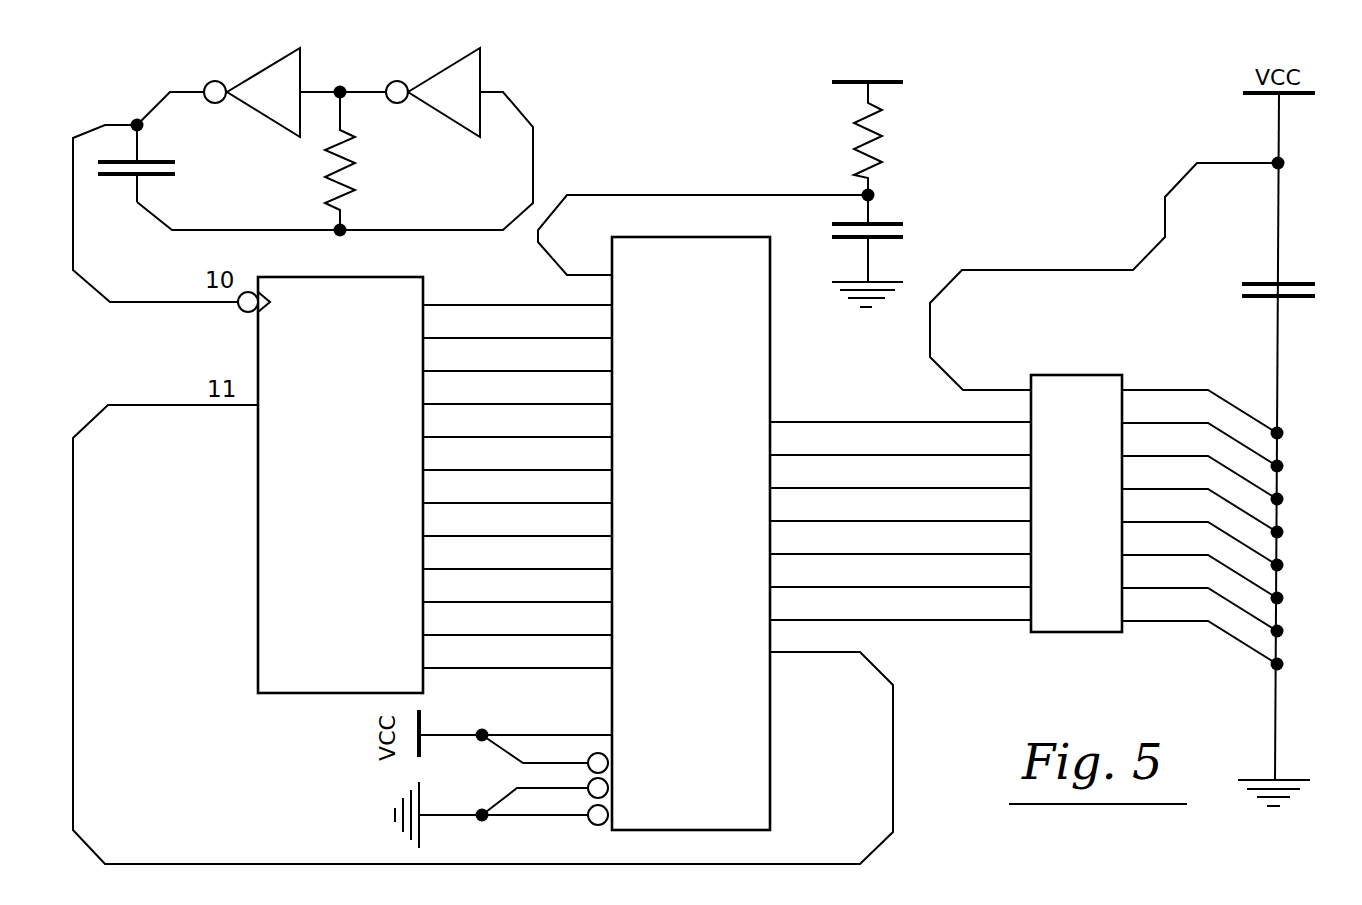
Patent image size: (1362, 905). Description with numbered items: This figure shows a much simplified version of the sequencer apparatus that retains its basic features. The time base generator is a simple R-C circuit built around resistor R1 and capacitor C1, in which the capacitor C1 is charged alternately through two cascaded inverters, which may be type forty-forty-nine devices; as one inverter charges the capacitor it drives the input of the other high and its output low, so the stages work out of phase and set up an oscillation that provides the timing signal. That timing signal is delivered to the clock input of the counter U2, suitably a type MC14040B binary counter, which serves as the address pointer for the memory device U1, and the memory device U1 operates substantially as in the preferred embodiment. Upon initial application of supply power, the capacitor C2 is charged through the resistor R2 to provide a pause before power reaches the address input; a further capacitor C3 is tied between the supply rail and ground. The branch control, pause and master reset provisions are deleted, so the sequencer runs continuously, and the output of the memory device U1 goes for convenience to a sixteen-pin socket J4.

The memory device U1 is at (694, 533).
The counter U2 is at (352, 485).
The resistor R1 is at (364, 161).
The resistor R2 is at (882, 125).
The capacitor C1 is at (143, 170).
The capacitor C2 is at (878, 248).
The capacitor C3 is at (1287, 271).
The socket J4 is at (1083, 498).